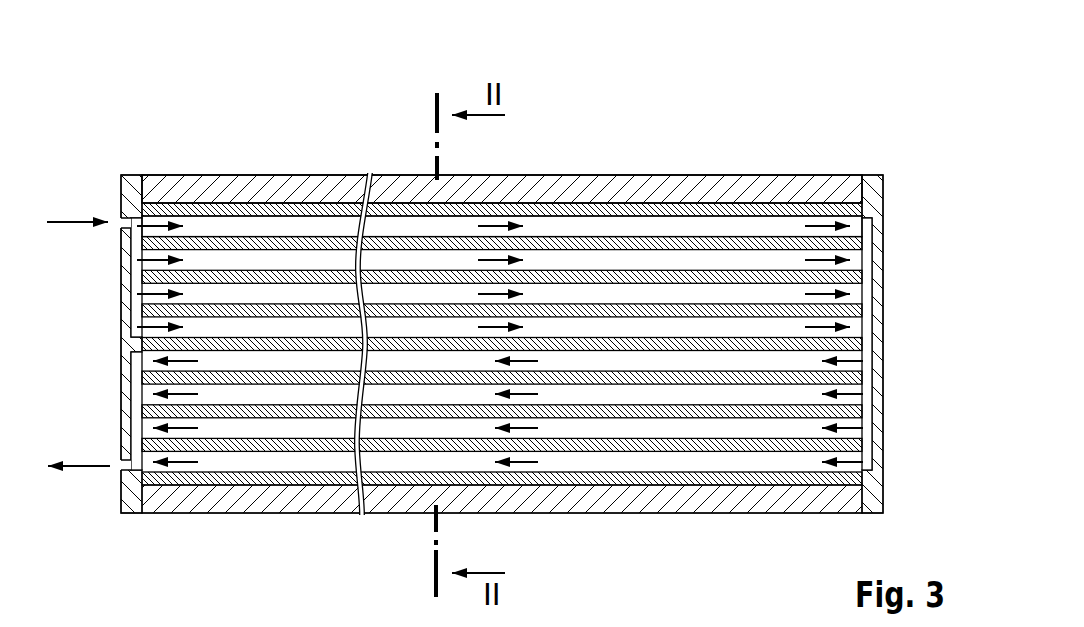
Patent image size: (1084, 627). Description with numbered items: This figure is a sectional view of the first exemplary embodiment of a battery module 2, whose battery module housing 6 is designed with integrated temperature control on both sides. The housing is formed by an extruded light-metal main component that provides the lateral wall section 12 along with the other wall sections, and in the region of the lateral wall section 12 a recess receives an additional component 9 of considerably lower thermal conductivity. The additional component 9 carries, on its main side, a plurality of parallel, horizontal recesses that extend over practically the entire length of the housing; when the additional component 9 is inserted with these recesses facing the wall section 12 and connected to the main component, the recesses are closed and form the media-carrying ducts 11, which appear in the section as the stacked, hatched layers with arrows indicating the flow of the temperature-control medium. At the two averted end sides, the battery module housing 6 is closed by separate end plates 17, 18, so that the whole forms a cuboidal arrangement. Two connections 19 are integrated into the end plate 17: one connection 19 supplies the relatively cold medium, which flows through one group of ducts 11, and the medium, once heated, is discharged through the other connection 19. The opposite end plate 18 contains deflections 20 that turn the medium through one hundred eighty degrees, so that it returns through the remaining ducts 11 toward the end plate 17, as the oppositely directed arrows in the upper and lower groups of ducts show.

The battery module 2 is at (827, 113).
The battery module housing 6 is at (743, 158).
The additional component 9 is at (630, 233).
The media-carrying ducts 11 is at (288, 327).
The lateral wall section 12 is at (572, 183).
The end plate 17 is at (125, 287).
The end plate 18 is at (878, 283).
The connection 19 is at (121, 217).
The deflection 20 is at (866, 345).